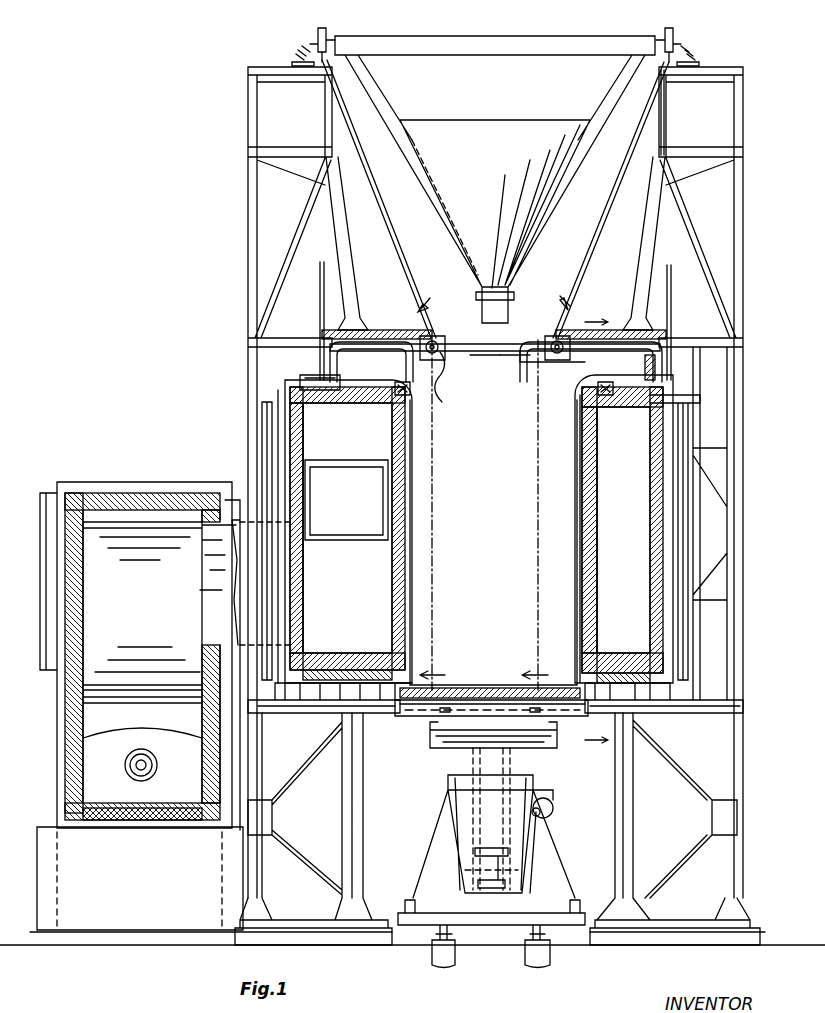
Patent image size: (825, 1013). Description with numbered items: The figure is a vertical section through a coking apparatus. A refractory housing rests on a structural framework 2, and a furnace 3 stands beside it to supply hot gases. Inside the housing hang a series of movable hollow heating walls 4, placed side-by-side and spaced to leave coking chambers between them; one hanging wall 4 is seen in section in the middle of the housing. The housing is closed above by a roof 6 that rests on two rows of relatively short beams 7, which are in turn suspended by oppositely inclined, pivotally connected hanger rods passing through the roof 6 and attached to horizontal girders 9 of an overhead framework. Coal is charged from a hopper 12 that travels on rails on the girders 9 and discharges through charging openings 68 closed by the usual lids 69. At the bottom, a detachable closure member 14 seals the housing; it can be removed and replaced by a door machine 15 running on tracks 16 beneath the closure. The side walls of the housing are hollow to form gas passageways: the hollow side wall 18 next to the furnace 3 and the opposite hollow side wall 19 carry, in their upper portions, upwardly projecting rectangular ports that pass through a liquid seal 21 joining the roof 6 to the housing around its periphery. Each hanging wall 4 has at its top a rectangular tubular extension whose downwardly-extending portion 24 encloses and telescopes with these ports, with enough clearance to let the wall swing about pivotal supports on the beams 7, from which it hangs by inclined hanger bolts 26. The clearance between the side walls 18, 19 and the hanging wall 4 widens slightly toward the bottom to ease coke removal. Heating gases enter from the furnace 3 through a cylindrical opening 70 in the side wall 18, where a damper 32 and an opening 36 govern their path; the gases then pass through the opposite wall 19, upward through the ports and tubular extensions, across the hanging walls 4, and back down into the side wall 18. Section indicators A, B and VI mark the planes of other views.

The structural framework 2 is at (262, 882).
The furnace 3 is at (133, 540).
The hanging heating wall 4 is at (580, 548).
The roof 6 is at (535, 365).
The beam 7 is at (456, 344).
The horizontal girder 9 is at (662, 96).
The hopper 12 is at (505, 130).
The bottom closure member 14 is at (418, 716).
The door machine 15 is at (540, 820).
The track 16 is at (500, 936).
The hollow side wall 18 is at (292, 420).
The opposite side wall 19 is at (618, 466).
The liquid seal 21 is at (300, 373).
The downwardly-extending portion 24 is at (370, 362).
The inclined hanger bolt 26 is at (440, 385).
The damper 32 is at (380, 496).
The opening 36 is at (592, 506).
The charging opening 68 is at (486, 352).
The lid 69 is at (506, 352).
The cylindrical opening 70 is at (300, 596).
The section line A is at (439, 487).
The section line B is at (546, 486).
The section line VI is at (590, 528).